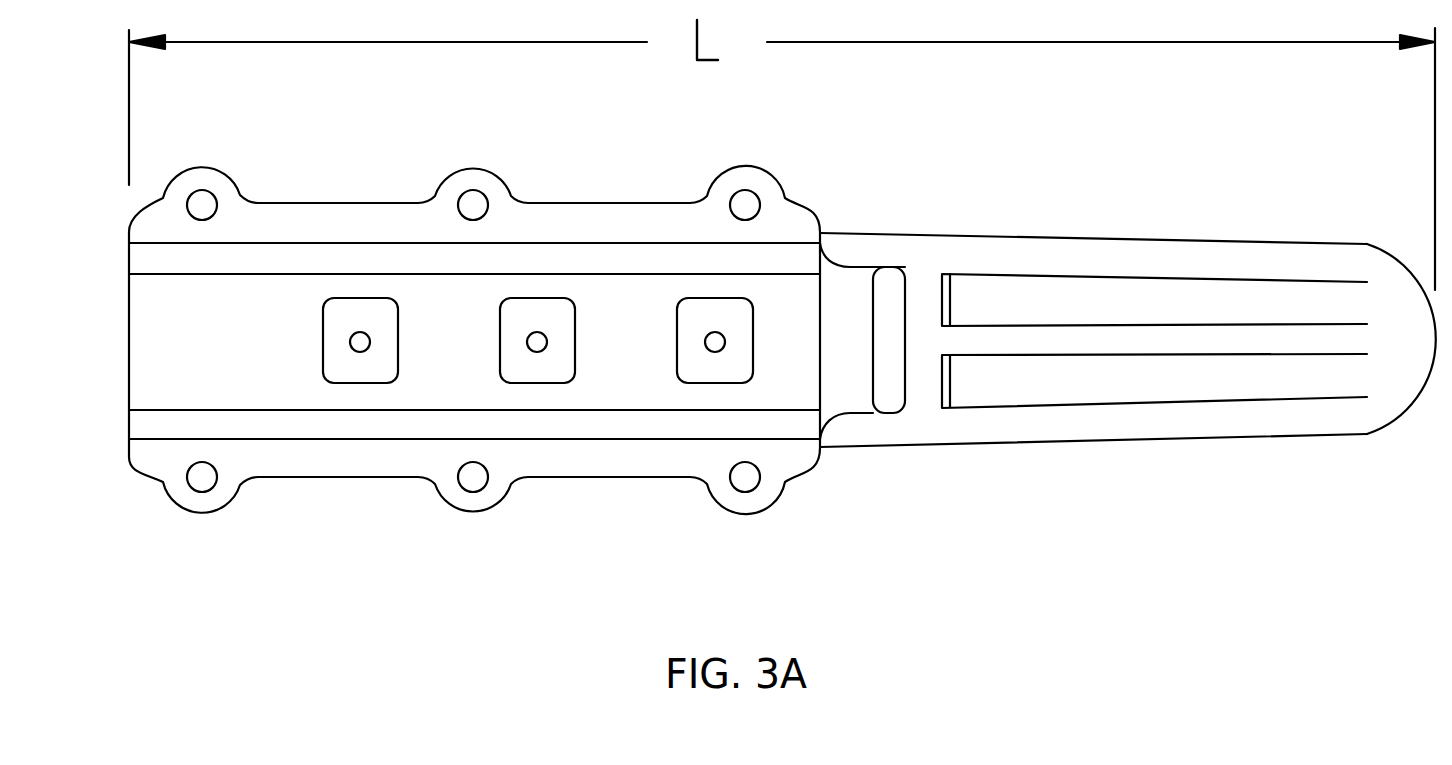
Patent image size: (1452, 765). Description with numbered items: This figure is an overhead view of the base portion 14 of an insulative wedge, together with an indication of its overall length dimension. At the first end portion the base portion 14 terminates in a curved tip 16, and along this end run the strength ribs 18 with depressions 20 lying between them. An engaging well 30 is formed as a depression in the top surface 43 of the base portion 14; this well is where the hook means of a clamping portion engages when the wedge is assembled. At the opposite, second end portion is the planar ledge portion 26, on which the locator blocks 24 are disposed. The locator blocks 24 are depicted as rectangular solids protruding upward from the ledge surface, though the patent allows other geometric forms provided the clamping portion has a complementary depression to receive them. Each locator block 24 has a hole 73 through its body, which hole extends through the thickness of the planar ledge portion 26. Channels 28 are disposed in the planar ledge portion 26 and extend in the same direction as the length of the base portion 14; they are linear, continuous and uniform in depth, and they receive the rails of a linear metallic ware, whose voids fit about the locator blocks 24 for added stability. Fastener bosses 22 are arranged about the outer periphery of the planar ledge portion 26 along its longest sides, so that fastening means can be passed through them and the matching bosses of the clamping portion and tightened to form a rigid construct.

The base portion 14 is at (1128, 295).
The curved tip 16 is at (1403, 345).
The strength ribs 18 is at (1142, 340).
The depressions 20 is at (1248, 303).
The fastener bosses 22 is at (220, 190).
The locator blocks 24 is at (337, 320).
The planar ledge portion 26 is at (192, 370).
The channels 28 is at (273, 258).
The engaging well 30 is at (888, 303).
The top surface 43 is at (883, 430).
The holes 73 is at (360, 342).